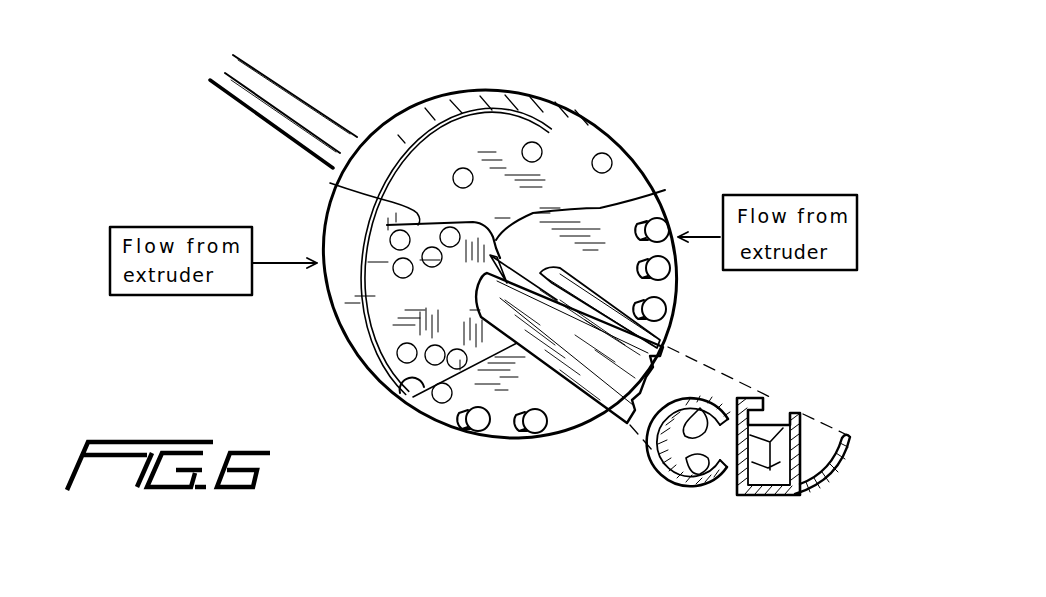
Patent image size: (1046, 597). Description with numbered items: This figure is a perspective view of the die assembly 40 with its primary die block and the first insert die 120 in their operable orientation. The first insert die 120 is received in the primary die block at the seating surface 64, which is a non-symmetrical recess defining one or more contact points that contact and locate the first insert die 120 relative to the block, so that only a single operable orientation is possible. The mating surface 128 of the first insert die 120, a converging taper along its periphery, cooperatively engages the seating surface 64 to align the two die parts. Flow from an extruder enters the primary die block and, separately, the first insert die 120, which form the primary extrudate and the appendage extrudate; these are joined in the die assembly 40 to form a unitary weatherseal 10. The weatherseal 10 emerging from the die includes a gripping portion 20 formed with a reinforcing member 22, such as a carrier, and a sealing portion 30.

The weatherseal 10 is at (786, 388).
The gripping portion 20 is at (800, 497).
The reinforcing member 22 is at (247, 70).
The sealing portion 30 is at (697, 483).
The die assembly 40 is at (633, 107).
The seating surface 64 is at (650, 197).
The first insert die 120 is at (366, 314).
The mating surface 128 is at (330, 183).